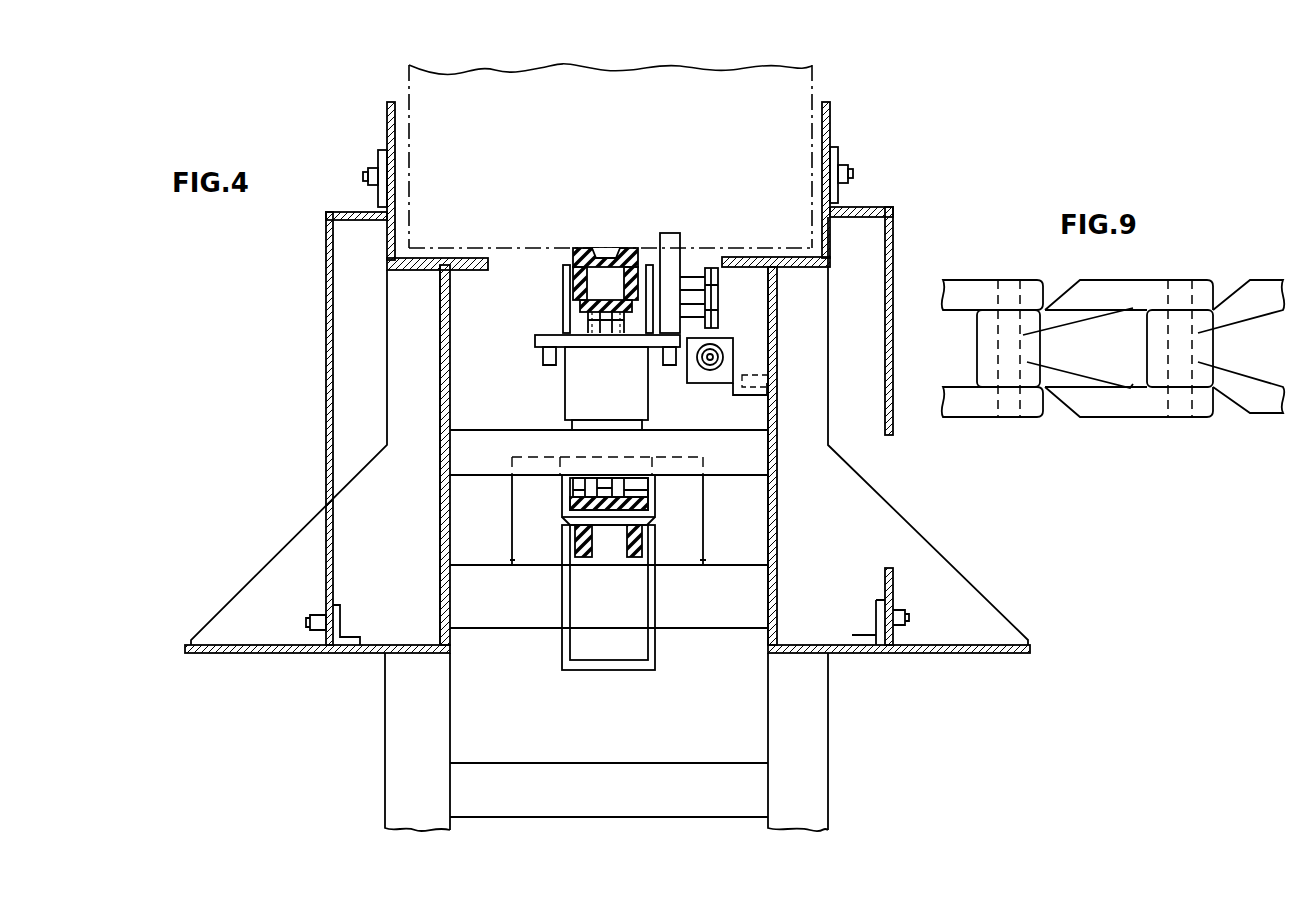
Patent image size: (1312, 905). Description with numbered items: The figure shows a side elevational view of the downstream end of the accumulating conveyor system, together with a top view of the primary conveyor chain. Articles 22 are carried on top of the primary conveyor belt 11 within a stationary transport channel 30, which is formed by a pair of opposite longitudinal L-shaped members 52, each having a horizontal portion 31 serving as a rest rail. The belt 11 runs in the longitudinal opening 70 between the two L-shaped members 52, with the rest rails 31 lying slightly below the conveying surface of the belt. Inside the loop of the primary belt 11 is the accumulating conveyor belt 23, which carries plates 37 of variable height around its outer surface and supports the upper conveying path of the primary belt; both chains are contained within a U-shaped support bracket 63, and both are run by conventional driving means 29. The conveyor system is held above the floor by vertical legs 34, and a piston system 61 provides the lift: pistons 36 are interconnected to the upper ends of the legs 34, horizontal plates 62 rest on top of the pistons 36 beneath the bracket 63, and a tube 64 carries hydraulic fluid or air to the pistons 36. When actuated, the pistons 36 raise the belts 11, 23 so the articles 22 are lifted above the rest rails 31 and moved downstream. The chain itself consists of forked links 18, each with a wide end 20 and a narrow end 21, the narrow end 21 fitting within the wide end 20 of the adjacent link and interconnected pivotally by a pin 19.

In FIG. 4, the primary conveyor belt 11 is at (596, 258).
In FIG. 9, the primary conveyor belt 11 is at (1208, 243).
In FIG. 9, the link 18 is at (976, 286).
In FIG. 9, the pin 19 is at (1008, 413).
In FIG. 9, the wide end 20 is at (1205, 409).
In FIG. 9, the narrow end 21 is at (1045, 378).
In FIG. 4, the article 22 is at (656, 90).
In FIG. 4, the accumulating conveyor belt 23 is at (607, 336).
In FIG. 4, the driving means 29 is at (252, 598).
In FIG. 4, the transport channel 30 is at (829, 113).
In FIG. 4, the horizontal portion 31 is at (431, 262).
In FIG. 4, the vertical leg 34 is at (395, 742).
In FIG. 4, the piston 36 is at (576, 381).
In FIG. 4, the plate 37 is at (646, 505).
In FIG. 4, the L-shaped member 52 is at (388, 122).
In FIG. 4, the piston system 61 is at (602, 236).
In FIG. 4, the horizontal plate 62 is at (536, 343).
In FIG. 4, the U-shaped support bracket 63 is at (571, 292).
In FIG. 4, the tube 64 is at (716, 350).
In FIG. 4, the longitudinal opening 70 is at (512, 264).